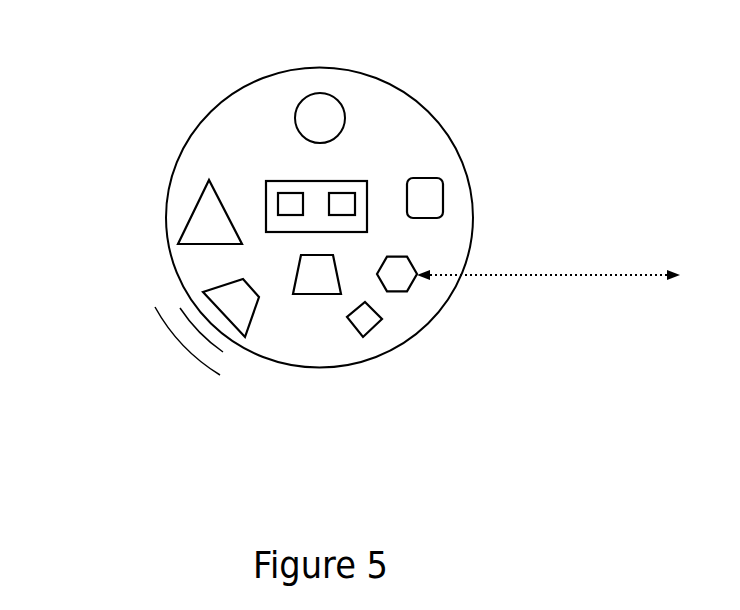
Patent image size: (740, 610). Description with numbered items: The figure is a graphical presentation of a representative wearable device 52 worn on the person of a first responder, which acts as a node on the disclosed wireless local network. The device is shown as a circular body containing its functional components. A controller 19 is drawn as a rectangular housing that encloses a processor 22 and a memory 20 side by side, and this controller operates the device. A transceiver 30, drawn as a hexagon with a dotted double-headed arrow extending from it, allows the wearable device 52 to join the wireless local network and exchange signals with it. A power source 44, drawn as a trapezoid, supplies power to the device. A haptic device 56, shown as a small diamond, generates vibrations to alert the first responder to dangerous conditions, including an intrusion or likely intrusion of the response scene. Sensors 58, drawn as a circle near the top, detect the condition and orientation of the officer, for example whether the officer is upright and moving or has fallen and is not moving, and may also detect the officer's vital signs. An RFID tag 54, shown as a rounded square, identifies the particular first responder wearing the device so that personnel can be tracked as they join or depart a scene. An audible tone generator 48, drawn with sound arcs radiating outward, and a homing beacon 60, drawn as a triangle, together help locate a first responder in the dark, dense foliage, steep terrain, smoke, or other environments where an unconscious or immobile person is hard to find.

The controller 19 is at (266, 197).
The memory 20 is at (355, 193).
The processor 22 is at (288, 192).
The transceiver 30 is at (405, 295).
The power source 44 is at (315, 295).
The audible tone generator 48 is at (203, 291).
The wearable device 52 is at (312, 373).
The RFID tag 54 is at (443, 177).
The haptic device 56 is at (368, 330).
The sensors 58 is at (340, 98).
The homing beacon 60 is at (197, 204).